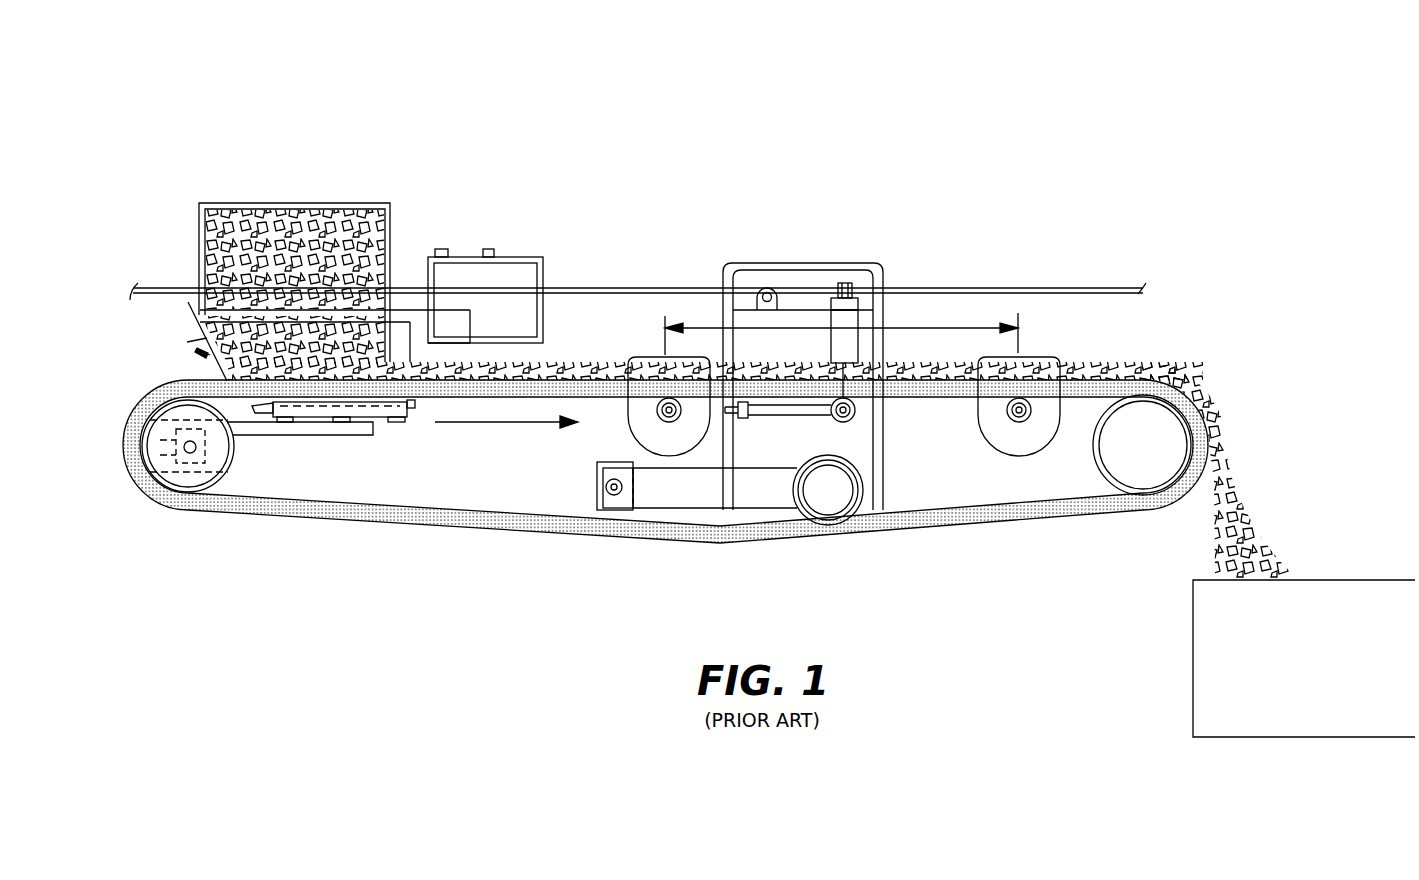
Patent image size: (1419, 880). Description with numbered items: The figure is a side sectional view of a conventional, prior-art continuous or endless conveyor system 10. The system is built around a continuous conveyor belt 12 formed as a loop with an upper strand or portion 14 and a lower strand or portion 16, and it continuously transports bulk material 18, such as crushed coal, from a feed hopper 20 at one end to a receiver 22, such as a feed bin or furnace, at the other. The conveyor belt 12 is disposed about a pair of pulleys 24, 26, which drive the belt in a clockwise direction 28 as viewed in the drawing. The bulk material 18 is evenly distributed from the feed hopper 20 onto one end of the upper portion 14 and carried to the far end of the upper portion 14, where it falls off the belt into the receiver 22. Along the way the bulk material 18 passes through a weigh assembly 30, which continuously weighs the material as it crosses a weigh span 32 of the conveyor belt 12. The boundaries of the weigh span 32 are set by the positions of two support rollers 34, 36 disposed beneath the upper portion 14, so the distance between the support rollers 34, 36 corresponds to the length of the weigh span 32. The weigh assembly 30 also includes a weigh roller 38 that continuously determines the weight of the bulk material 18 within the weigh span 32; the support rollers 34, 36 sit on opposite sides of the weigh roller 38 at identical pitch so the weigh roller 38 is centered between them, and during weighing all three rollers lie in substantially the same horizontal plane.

The conveyor system 10 is at (620, 180).
The conveyor belt 12 is at (153, 383).
The upper strand or portion 14 is at (612, 368).
The lower strand or portion 16 is at (592, 528).
The bulk material 18 is at (356, 212).
The feed hopper 20 is at (193, 222).
The receiver 22 is at (1240, 658).
The pulley 24 is at (180, 470).
The pulley 26 is at (1142, 462).
The clockwise direction 28 is at (500, 424).
The weigh assembly 30 is at (826, 316).
The weigh span 32 is at (914, 327).
The support roller 34 is at (668, 422).
The support roller 36 is at (1020, 422).
The weigh roller 38 is at (846, 422).